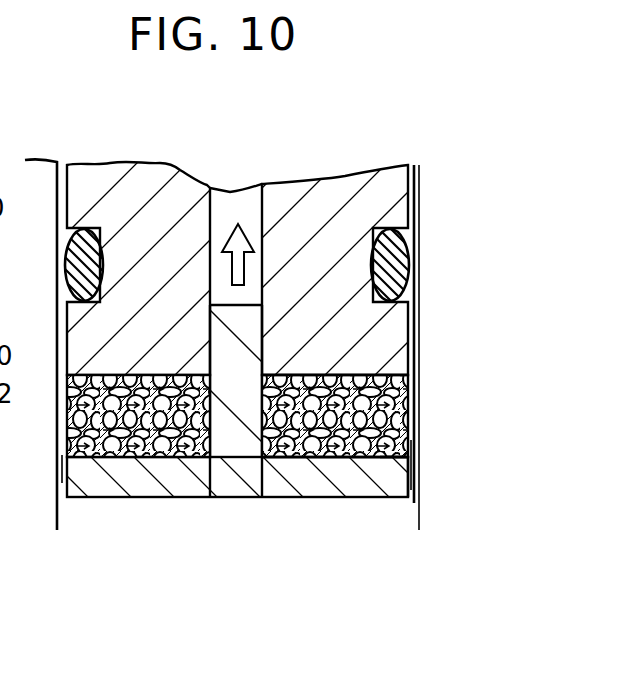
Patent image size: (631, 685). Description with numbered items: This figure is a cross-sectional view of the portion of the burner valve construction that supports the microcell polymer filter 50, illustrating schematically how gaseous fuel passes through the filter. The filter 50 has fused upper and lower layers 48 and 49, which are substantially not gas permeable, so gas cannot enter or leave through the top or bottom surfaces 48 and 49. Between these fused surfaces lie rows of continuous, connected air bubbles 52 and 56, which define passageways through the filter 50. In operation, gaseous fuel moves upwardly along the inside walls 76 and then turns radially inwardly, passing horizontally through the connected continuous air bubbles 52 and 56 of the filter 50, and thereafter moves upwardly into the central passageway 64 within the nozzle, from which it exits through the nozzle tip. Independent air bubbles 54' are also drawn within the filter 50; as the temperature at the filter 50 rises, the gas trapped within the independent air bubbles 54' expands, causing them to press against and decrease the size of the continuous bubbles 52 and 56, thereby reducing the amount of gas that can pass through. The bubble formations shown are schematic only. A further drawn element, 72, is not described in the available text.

The central passageway 64 is at (240, 185).
The fused upper layer 48 is at (277, 374).
The continuous, connected air bubbles 52 is at (307, 374).
The filter 50 is at (70, 408).
The independent air bubbles 54' is at (250, 400).
The continuous, connected air bubbles 56 is at (355, 460).
The end plate 72 is at (186, 483).
The inside walls 76 is at (420, 380).
The fused lower layer 49 is at (390, 470).